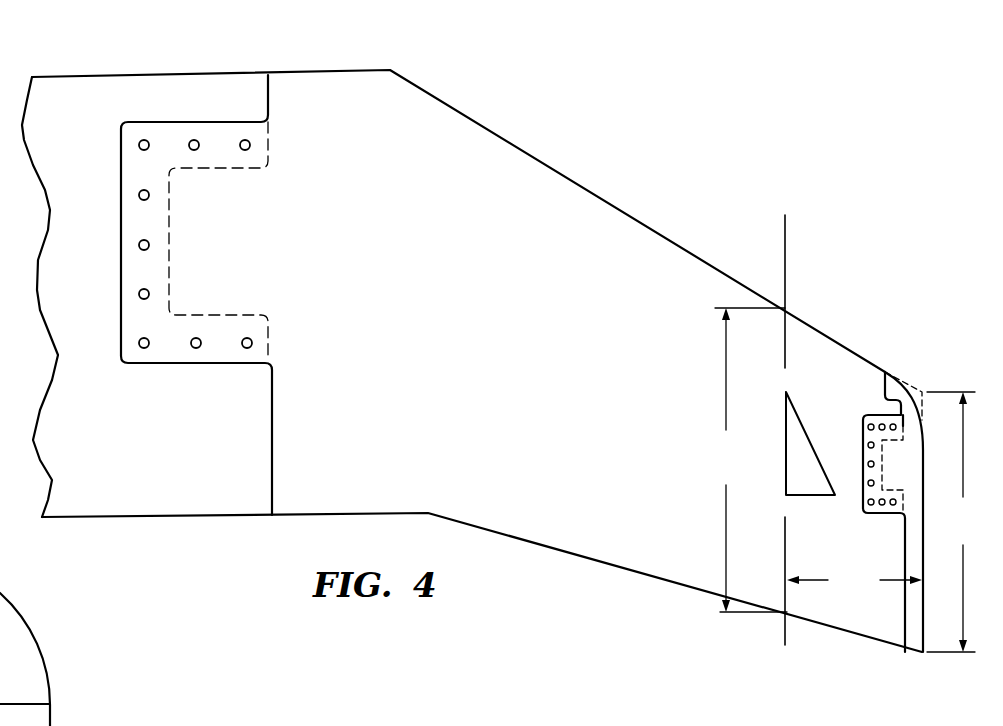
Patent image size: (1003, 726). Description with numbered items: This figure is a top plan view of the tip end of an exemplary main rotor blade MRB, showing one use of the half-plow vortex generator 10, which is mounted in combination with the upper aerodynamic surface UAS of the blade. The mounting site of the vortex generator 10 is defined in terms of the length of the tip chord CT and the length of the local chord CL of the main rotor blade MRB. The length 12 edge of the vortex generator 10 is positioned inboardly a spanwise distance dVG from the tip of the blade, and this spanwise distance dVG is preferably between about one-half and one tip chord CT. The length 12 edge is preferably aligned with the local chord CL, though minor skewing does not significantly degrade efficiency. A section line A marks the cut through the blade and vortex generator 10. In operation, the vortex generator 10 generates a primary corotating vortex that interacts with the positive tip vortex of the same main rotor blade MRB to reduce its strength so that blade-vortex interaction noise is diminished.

The vortex generator 10 is at (816, 483).
The length edge 12 is at (628, 721).
The main rotor blade MRB is at (598, 565).
The upper aerodynamic surface UAS is at (527, 392).
The section line A- A is at (785, 215).
The local chord CL is at (751, 460).
The tip chord CT is at (953, 522).
The spanwise distance dVG is at (854, 579).